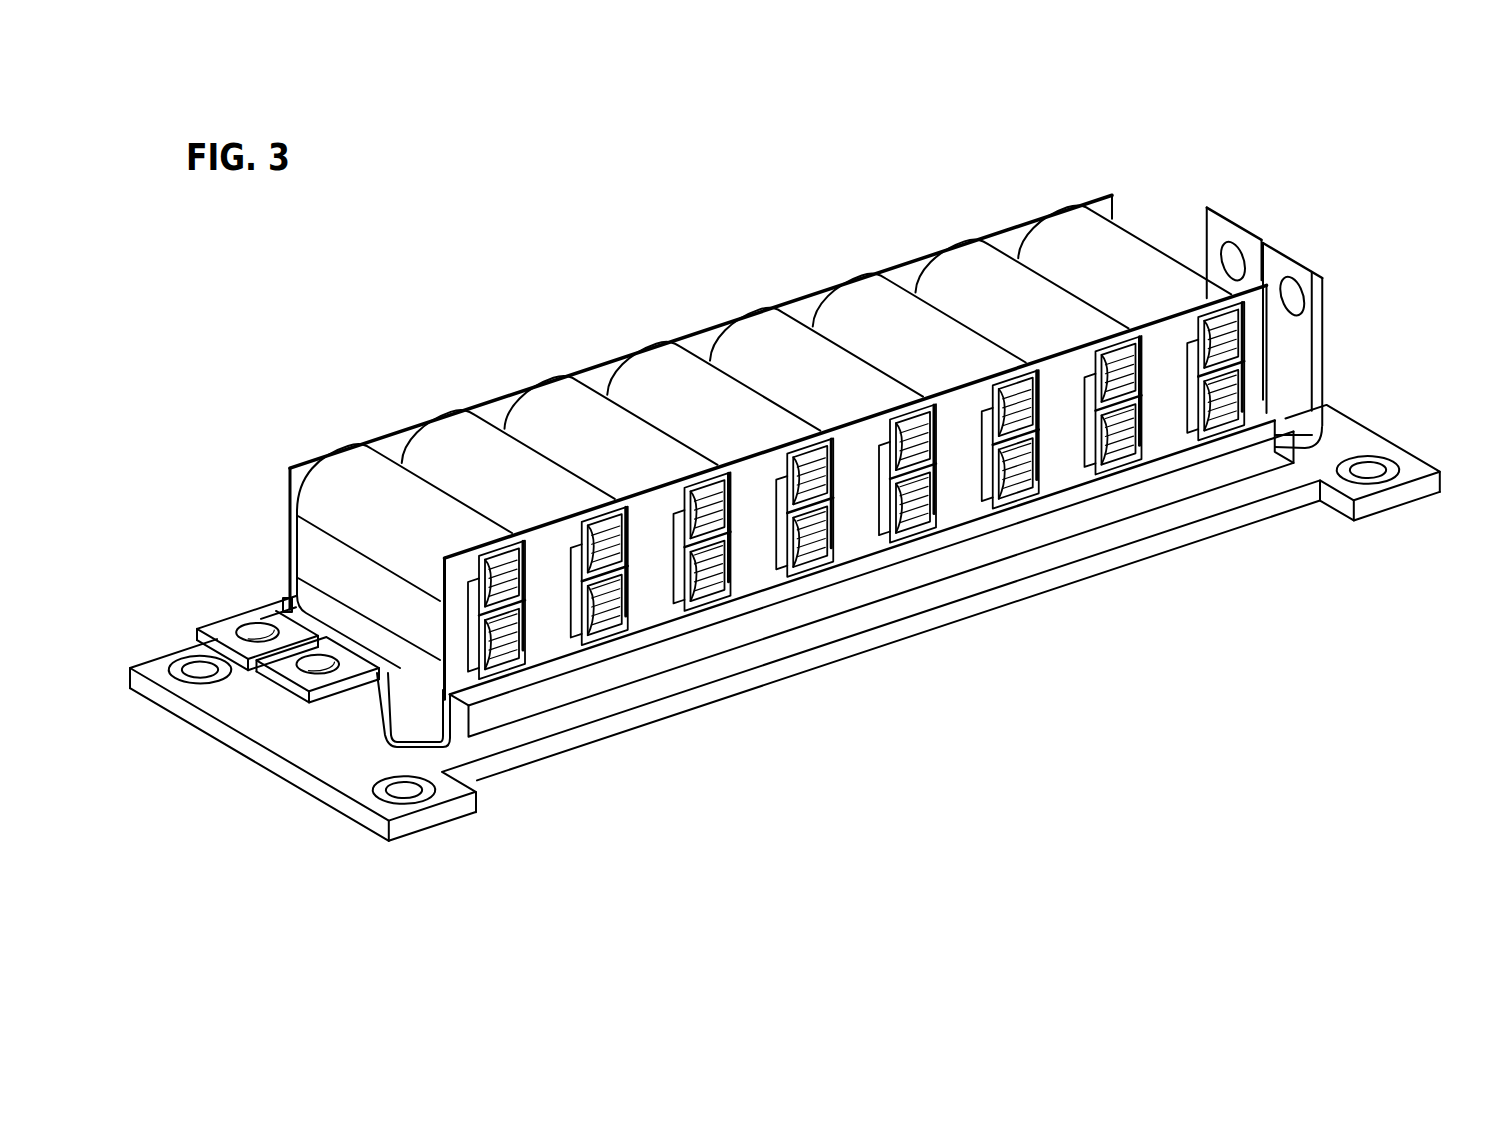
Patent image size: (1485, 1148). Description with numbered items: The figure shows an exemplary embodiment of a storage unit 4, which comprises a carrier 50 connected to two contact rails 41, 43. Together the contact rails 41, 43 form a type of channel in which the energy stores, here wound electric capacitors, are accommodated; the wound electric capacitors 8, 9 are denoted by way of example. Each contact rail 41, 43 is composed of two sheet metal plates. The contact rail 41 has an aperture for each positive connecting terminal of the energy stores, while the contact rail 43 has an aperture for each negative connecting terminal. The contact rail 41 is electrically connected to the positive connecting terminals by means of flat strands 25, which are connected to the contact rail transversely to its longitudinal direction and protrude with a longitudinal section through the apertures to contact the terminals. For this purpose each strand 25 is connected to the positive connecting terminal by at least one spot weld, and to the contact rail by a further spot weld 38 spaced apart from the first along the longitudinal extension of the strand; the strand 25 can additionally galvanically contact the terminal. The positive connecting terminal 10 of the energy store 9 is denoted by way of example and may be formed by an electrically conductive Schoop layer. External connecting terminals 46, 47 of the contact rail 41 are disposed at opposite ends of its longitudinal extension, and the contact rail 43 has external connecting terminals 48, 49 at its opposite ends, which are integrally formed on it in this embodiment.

The storage unit 4 is at (811, 489).
The wound electric capacitor 8 is at (345, 475).
The wound electric capacitor 9 is at (455, 445).
The positive connecting terminal 10 is at (576, 590).
The strand 25 is at (856, 560).
The spot weld 38 is at (605, 573).
The contact rail 41 is at (869, 505).
The contact rail 43 is at (1013, 245).
The external connecting terminal 46 is at (285, 690).
The external connecting terminal 47 is at (1298, 270).
The external connecting terminal 48 is at (222, 650).
The external connecting terminal 49 is at (1237, 228).
The carrier 50 is at (962, 613).